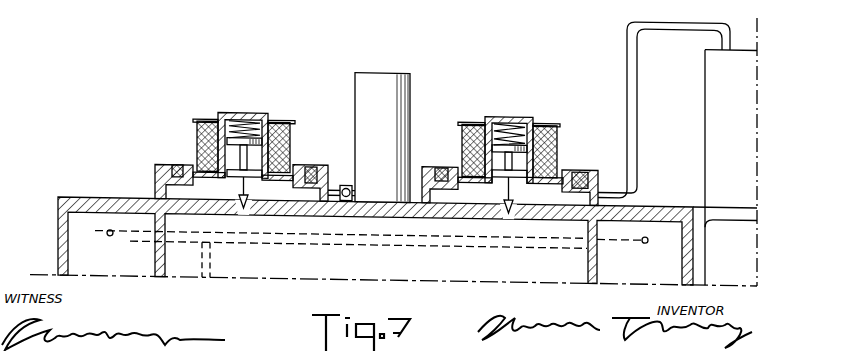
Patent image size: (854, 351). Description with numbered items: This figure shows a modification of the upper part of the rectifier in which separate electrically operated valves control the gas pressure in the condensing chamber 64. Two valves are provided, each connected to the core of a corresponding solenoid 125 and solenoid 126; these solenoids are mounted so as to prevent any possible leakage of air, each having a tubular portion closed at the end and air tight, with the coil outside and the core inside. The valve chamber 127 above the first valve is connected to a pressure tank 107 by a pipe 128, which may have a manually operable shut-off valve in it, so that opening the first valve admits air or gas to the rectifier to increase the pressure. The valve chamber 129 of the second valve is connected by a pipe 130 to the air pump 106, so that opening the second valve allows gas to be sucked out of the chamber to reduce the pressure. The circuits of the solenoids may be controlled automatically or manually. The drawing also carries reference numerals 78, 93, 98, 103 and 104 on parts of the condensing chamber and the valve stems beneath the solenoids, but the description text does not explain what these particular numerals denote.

The condensing chamber 64 is at (393, 241).
The chamber 78 is at (339, 253).
The slot 93 is at (212, 257).
The rod 98 is at (362, 233).
The pin 103 is at (246, 207).
The pin 104 is at (507, 208).
The air pump 106 is at (725, 151).
The pressure tank 107 is at (410, 70).
The solenoid 125 is at (195, 133).
The solenoid 126 is at (462, 140).
The valve chamber 127 is at (241, 182).
The pipe 128 is at (345, 181).
The valve chamber 129 is at (510, 187).
The pipe 130 is at (627, 98).